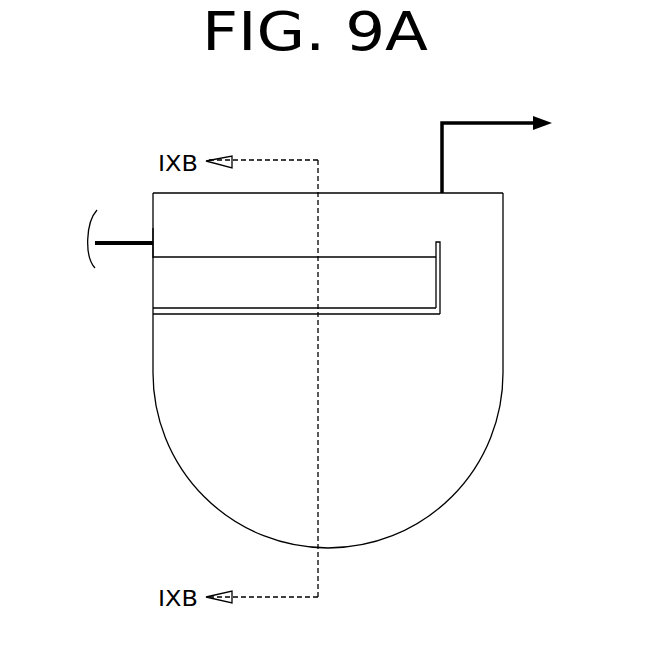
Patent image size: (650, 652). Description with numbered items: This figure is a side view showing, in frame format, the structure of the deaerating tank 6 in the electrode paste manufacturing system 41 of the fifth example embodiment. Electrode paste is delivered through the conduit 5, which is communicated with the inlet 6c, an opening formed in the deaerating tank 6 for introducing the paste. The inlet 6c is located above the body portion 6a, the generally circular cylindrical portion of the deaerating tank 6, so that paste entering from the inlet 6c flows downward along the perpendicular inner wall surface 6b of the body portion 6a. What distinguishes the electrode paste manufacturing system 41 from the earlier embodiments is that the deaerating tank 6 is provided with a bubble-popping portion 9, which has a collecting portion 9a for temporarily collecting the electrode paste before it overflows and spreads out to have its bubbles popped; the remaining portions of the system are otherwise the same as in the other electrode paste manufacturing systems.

The conduit 5 is at (119, 259).
The deaerating tank 6 is at (522, 457).
The body portion 6a is at (513, 251).
The inner wall surface 6b is at (153, 350).
The inlet 6c is at (152, 242).
The bubble-popping portion 9 is at (296, 325).
The collecting portion 9a is at (241, 312).
The electrode paste manufacturing system 41 is at (123, 502).